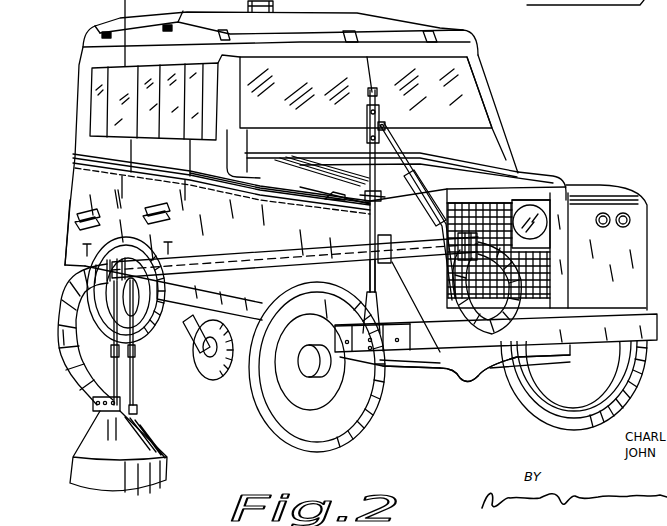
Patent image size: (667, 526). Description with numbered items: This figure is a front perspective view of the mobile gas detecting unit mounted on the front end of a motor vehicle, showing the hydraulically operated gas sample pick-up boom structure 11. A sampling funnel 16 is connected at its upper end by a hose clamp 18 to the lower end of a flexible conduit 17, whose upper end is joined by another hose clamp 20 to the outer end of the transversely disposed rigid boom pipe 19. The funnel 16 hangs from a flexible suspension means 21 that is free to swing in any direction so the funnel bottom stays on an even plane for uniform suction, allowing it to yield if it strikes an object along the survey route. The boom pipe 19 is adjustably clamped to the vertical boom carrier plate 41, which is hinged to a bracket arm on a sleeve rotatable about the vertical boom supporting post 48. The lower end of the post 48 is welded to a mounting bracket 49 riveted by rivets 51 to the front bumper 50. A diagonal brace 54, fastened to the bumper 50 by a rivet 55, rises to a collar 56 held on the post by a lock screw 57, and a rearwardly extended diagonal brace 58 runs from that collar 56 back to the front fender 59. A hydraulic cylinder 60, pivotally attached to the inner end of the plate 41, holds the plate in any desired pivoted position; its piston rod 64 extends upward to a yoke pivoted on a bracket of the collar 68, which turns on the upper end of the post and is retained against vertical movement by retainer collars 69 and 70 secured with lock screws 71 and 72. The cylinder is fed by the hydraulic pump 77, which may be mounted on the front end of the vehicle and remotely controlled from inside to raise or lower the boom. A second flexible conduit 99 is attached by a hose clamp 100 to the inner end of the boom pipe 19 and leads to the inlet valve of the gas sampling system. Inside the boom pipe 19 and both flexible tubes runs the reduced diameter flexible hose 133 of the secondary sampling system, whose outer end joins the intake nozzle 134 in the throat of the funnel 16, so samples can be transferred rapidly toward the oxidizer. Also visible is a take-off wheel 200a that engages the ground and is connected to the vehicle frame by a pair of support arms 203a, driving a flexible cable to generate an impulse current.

The gas sample pick-up boom structure 11 is at (60, 307).
The sampling funnel 16 is at (82, 474).
The flexible conduit 17 is at (61, 333).
The hose clamp 18 is at (93, 402).
The boom pipe 19 is at (252, 254).
The hose clamp 20 is at (105, 275).
The flexible suspension means 21 is at (137, 383).
The boom carrier plate 41 is at (410, 254).
The boom supporting post 48 is at (378, 288).
The mounting bracket 49 is at (380, 327).
The front bumper 50 is at (518, 338).
The rivets 51 is at (381, 358).
The diagonal brace 54 is at (413, 335).
The rivet 55 is at (440, 335).
The collar 56 is at (373, 194).
The lock screw 57 is at (347, 212).
The rearwardly extended diagonal brace 58 is at (333, 196).
The front fender 59 is at (262, 205).
The hydraulic cylinder 60 is at (428, 182).
The piston rod 64 is at (397, 148).
The collar 68 is at (366, 126).
The retainer collar 69 is at (368, 112).
The retainer collar 70 is at (368, 136).
The lock screw 71 is at (380, 110).
The lock screw 72 is at (385, 128).
The pump 77 is at (467, 308).
The second flexible conduit 99 is at (523, 204).
The hose clamp 100 is at (512, 208).
The reduced diameter flexible hose 133 is at (280, 254).
The nozzle 134 is at (112, 432).
The take-off wheel 200a is at (220, 381).
The support arms 203a is at (170, 333).